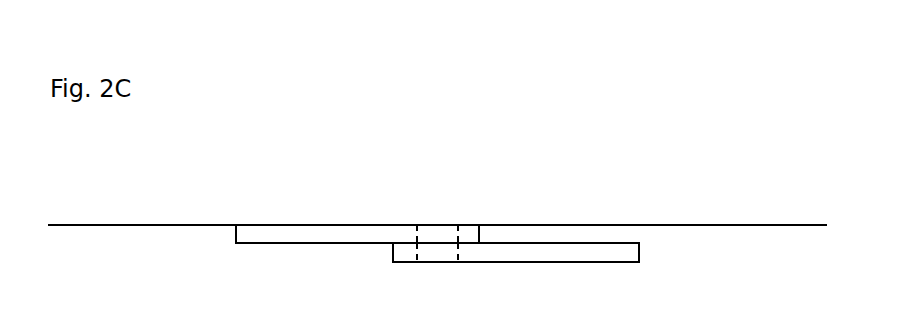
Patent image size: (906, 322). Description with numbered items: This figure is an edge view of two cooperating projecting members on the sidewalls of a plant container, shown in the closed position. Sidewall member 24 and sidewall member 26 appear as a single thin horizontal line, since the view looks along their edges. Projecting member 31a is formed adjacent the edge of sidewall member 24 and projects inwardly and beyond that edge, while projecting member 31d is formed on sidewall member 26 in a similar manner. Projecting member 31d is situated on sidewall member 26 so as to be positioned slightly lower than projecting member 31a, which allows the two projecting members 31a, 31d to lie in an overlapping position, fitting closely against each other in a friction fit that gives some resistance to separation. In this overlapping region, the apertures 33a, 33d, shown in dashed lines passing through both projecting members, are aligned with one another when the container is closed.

The sidewall member 24 is at (208, 224).
The sidewall member 26 is at (652, 224).
The projecting member 31a is at (283, 244).
The projecting member 31d is at (558, 261).
The aperture 33a is at (437, 234).
The aperture 33d is at (437, 257).